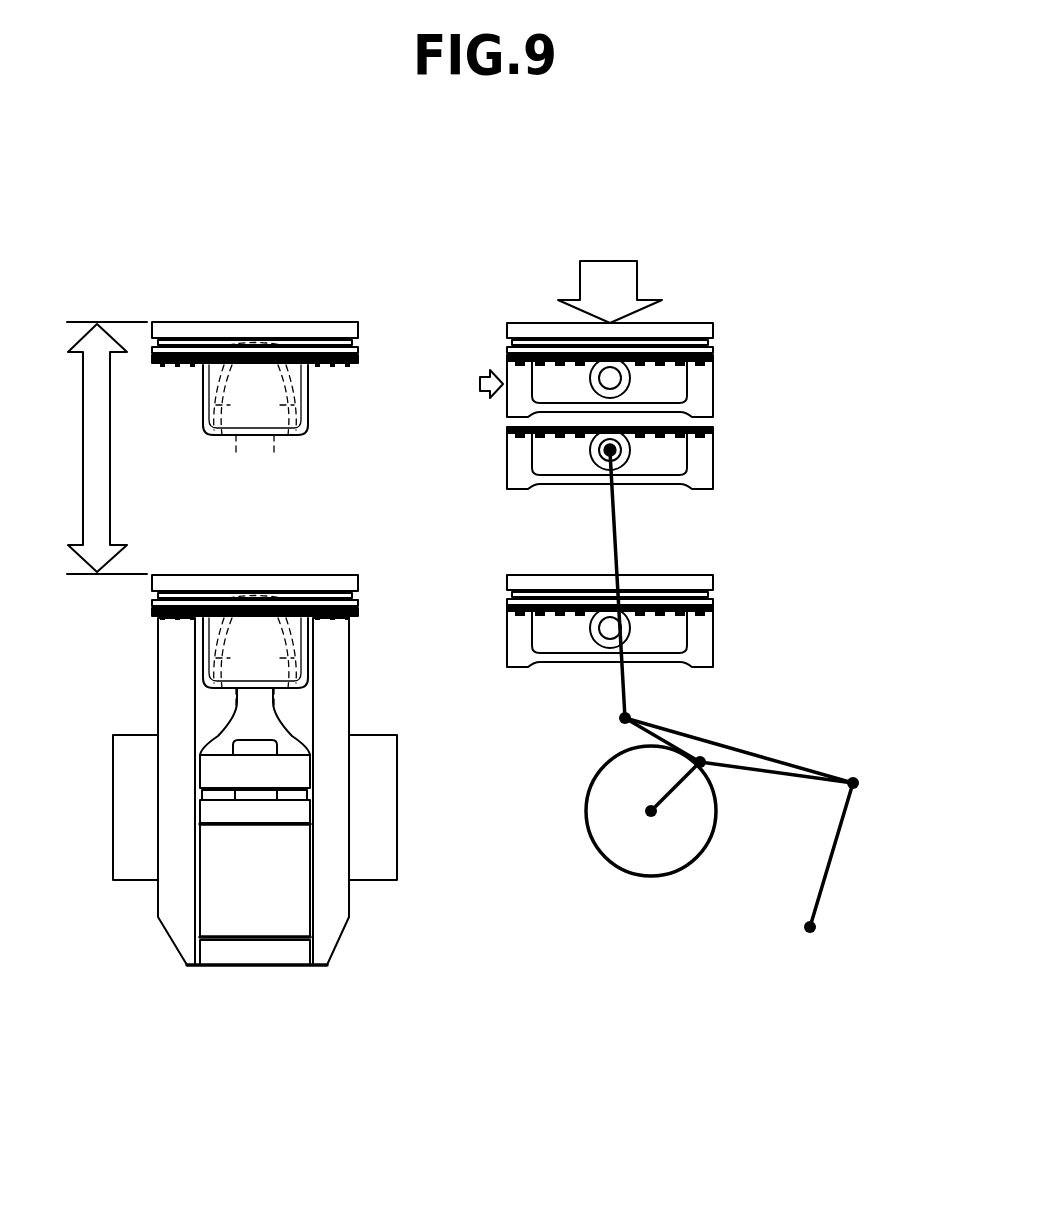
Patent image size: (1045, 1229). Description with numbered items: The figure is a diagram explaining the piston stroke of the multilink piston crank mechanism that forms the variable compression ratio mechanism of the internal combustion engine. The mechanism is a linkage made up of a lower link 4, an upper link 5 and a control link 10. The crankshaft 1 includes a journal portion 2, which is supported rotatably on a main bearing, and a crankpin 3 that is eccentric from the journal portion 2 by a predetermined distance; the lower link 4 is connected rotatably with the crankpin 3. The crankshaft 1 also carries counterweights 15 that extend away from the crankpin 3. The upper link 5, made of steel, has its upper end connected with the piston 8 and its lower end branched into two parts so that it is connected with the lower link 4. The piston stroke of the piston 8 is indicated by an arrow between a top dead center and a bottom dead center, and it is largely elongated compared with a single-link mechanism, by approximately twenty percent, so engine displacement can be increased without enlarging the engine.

The crankshaft 1 is at (370, 868).
The journal portion 2 is at (130, 853).
The crankpin 3 is at (270, 915).
The lower link 4 is at (227, 953).
The upper link 5 is at (283, 728).
The piston 8 is at (298, 328).
The control link 10 is at (837, 848).
The counterweight 15 is at (168, 720).